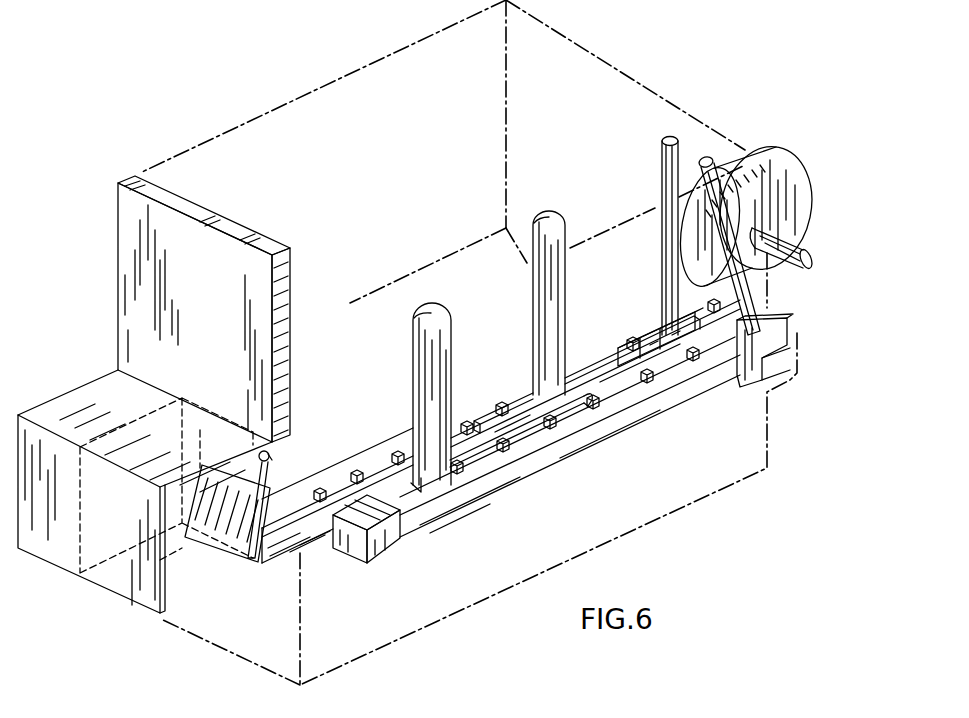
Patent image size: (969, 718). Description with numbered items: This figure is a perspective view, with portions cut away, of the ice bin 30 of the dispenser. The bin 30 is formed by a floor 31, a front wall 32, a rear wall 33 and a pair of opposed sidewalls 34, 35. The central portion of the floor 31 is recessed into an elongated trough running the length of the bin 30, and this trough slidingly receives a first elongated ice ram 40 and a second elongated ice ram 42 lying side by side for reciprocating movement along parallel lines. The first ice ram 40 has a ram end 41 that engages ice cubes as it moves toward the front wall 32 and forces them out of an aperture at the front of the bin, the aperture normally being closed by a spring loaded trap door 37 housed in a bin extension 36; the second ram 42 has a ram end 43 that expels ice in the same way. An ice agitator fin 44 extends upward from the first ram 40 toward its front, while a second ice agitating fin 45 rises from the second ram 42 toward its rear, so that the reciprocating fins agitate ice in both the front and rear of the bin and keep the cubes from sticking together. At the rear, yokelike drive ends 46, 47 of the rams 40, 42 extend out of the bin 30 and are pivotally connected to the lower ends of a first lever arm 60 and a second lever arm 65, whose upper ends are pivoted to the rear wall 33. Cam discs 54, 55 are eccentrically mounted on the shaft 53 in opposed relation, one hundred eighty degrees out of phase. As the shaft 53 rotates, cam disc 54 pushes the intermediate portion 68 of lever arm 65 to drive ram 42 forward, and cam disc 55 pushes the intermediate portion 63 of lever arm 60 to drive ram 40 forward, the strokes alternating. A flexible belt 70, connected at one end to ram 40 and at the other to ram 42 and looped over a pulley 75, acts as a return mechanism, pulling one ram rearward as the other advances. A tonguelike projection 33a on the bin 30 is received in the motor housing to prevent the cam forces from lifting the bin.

The ice bin 30 is at (212, 92).
The floor 31 is at (472, 243).
The front wall 32 is at (133, 292).
The rear wall 33 is at (636, 78).
The tonguelike projection 33a is at (802, 380).
The sidewall 34 is at (340, 75).
The sidewall 35 is at (482, 292).
The bin extension 36 is at (128, 580).
The spring loaded trap door 37 is at (217, 540).
The first elongated ice ram 40 is at (527, 467).
The ram end 41 is at (353, 550).
The second elongated ice ram 42 is at (458, 440).
The ram end 43 is at (258, 563).
The ice agitator fin 44 is at (548, 220).
The second ice agitating fin 45 is at (440, 335).
The yokelike drive end 46 is at (746, 393).
The yokelike drive end 47 is at (641, 316).
The shaft 53 is at (810, 247).
The cam disc 54 is at (720, 178).
The cam disc 55 is at (788, 160).
The first lever arm 60 is at (728, 304).
The intermediate portion 63 is at (733, 238).
The second lever arm 65 is at (650, 182).
The intermediate portion 68 is at (664, 240).
The flexible belt 70 is at (518, 423).
The pulley 75 is at (583, 410).